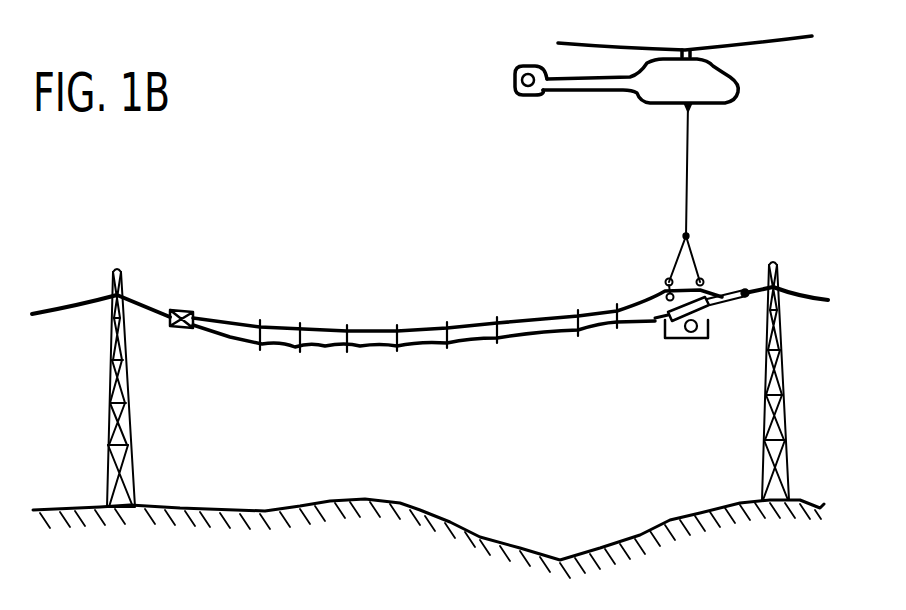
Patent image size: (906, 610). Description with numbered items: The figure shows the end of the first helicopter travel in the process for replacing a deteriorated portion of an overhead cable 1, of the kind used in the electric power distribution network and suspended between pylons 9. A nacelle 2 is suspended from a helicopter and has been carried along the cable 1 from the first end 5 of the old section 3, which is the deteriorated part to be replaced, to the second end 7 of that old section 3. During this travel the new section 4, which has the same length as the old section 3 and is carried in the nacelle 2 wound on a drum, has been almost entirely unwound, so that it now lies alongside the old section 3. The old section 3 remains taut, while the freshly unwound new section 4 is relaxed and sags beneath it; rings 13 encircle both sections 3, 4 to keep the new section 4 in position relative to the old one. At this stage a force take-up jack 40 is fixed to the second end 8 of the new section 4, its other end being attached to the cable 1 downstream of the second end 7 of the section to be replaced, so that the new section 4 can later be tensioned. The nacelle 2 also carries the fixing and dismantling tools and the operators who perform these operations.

The overhead cable 1 is at (61, 285).
The nacelle 2 is at (680, 348).
The old section 3 is at (369, 325).
The new section 4 is at (357, 354).
The first end of the old section 5 is at (218, 322).
The second end of the old section 7 is at (715, 293).
The second end of the new section 8 is at (655, 318).
The pylon 9 is at (110, 435).
The ring 13 is at (540, 318).
The force take-up jack 40 is at (712, 310).